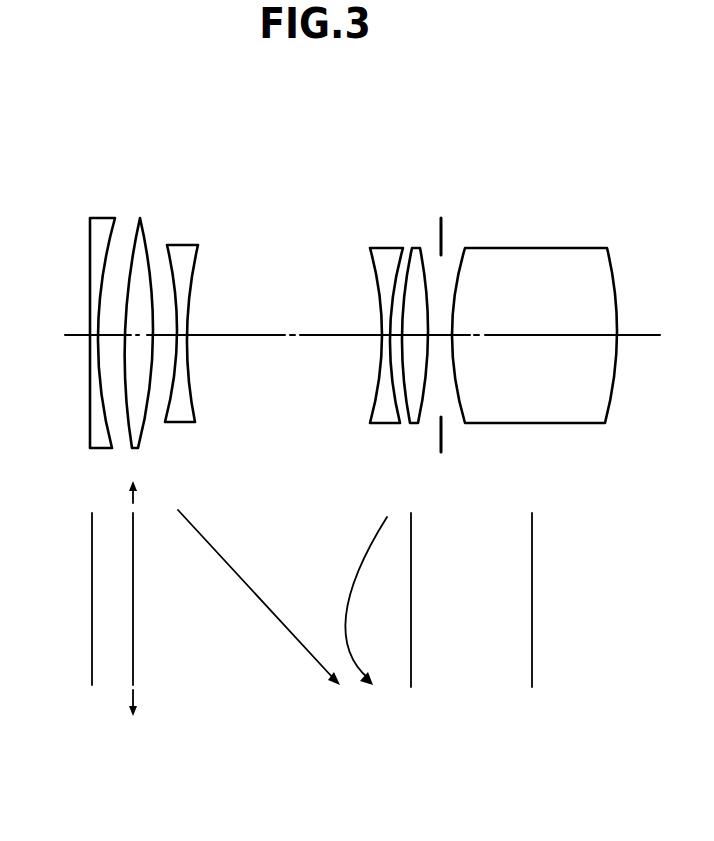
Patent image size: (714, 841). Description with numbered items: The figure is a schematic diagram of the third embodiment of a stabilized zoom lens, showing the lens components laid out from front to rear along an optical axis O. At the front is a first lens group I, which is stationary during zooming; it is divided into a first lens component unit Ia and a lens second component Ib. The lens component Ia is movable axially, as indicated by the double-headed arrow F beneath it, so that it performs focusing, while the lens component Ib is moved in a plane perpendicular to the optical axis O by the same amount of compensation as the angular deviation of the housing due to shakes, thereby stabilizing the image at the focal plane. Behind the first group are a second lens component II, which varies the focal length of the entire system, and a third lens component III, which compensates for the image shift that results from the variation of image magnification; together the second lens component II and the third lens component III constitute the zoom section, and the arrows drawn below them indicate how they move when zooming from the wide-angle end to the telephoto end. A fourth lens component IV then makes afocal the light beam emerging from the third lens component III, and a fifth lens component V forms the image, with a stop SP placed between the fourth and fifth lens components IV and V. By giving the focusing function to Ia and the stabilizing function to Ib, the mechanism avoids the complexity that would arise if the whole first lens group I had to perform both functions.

The optical axis O is at (65, 335).
The first lens group I is at (80, 155).
The first lens component unit Ia is at (97, 218).
The lens second component Ib is at (137, 218).
The second lens component II is at (180, 245).
The third lens component III is at (385, 248).
The fourth lens component IV is at (415, 248).
The stop SP is at (441, 232).
The fifth lens component V is at (528, 248).
The focusing movement F is at (102, 703).